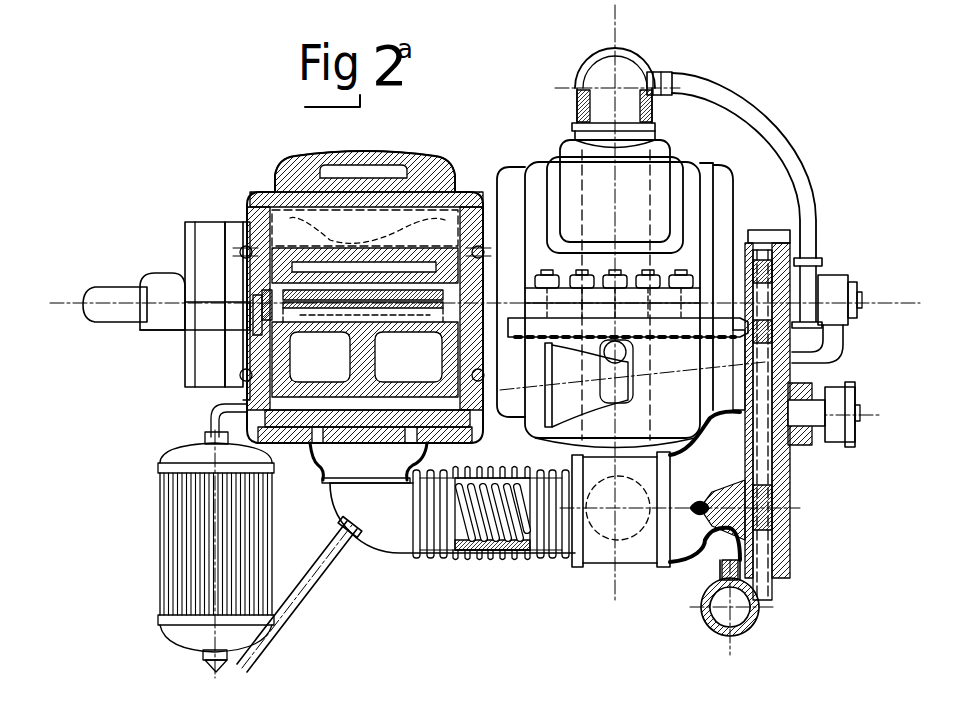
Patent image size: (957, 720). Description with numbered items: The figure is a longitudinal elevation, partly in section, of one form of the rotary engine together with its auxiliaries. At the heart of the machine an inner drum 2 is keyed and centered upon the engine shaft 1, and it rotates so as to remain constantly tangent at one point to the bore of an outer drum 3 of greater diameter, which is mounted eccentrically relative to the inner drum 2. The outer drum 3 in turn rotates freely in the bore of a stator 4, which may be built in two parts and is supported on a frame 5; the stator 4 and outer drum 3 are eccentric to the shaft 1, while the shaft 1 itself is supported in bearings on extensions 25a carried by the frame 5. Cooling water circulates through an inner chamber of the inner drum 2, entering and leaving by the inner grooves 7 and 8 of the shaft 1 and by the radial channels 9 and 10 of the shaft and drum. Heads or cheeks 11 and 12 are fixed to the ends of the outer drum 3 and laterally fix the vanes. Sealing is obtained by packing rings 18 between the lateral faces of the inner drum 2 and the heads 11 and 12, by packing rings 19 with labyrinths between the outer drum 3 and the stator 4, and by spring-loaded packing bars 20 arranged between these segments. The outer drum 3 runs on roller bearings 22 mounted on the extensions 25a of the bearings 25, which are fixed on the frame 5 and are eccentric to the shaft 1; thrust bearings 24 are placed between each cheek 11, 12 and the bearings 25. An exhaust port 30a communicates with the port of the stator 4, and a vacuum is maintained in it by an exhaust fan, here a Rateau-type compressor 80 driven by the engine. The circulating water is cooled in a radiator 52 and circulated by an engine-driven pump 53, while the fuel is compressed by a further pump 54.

The engine shaft 1 is at (250, 328).
The inner drum 2 is at (280, 133).
The outer drum 3 is at (363, 562).
The stator 4 is at (517, 173).
The frame 5 is at (162, 315).
The inner groove of the shaft 7 is at (413, 298).
The inner groove of the shaft 8 is at (430, 312).
The radial channel 9 is at (365, 265).
The radial channel 10 is at (387, 360).
The head or cheek 11 is at (243, 205).
The head or cheek 12 is at (484, 213).
The packing rings 18 is at (484, 250).
The packing rings 19 is at (393, 155).
The packing bars 20 is at (408, 158).
The roller bearings 22 is at (243, 273).
The thrust bearings 24 is at (238, 247).
The bearings 25 is at (248, 250).
The bearing extensions 25a is at (210, 293).
The exhaust port 30a is at (392, 465).
The radiator 52 is at (230, 580).
The pump 53 is at (830, 320).
The pump 54 is at (833, 423).
The compressor 80 is at (713, 547).